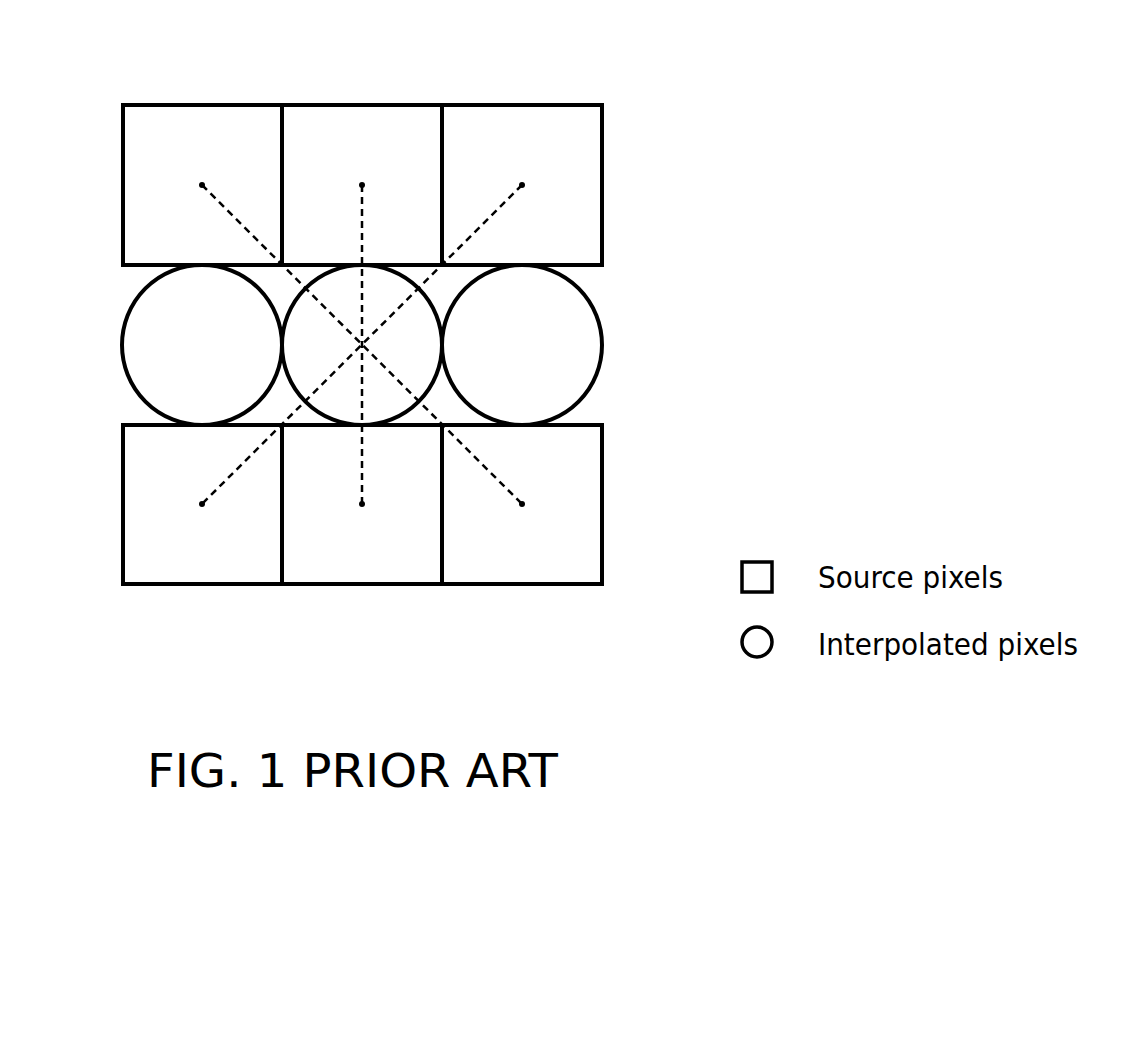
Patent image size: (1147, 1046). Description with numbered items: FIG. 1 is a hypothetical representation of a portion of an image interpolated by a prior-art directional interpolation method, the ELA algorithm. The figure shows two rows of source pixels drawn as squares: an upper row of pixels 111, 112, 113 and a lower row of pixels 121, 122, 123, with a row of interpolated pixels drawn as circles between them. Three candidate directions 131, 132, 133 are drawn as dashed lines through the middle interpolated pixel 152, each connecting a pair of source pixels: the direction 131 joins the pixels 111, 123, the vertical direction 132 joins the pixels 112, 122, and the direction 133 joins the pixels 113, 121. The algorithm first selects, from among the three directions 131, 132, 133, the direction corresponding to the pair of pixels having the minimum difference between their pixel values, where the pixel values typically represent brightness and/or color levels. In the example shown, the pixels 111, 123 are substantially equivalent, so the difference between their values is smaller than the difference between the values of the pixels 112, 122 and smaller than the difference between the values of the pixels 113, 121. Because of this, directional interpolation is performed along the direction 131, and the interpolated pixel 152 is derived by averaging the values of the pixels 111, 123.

The pixel 111 is at (205, 102).
The pixel 112 is at (365, 102).
The pixel 113 is at (523, 102).
The pixel 121 is at (205, 586).
The pixel 122 is at (365, 586).
The pixel 123 is at (523, 586).
The direction 131 is at (503, 483).
The direction 132 is at (363, 468).
The direction 133 is at (227, 482).
The interpolated pixel 152 is at (430, 293).